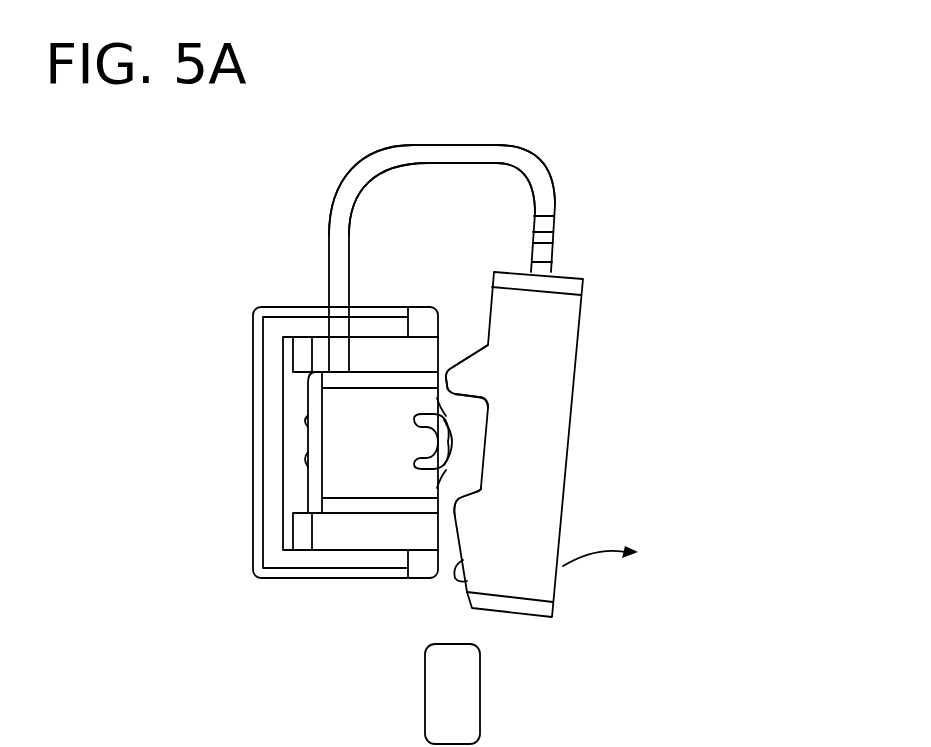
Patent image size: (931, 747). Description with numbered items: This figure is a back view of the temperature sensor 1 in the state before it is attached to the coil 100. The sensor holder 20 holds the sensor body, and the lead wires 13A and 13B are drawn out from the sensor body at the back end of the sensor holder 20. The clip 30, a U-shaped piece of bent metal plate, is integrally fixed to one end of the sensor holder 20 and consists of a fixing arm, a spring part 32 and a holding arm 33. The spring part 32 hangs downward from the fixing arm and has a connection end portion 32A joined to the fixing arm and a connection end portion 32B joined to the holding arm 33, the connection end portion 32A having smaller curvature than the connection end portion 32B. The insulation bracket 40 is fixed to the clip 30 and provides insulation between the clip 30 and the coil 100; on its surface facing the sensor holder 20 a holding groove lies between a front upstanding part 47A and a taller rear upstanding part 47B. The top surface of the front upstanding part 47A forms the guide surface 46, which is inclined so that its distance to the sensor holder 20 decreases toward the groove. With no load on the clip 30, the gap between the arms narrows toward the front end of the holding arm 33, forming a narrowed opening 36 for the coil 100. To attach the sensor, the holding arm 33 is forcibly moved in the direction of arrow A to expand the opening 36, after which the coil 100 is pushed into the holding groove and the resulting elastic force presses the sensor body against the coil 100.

The temperature sensor 1 is at (300, 258).
The sensor holder 20 is at (283, 397).
The lead wire 13A is at (304, 424).
The lead wire 13B is at (304, 462).
The clip 30 is at (457, 145).
The spring part 32 is at (500, 148).
The connection end portion 32A is at (382, 158).
The connection end portion 32B is at (545, 168).
The holding arm 33 is at (552, 253).
The opening 36 is at (445, 538).
The insulation bracket 40 is at (567, 475).
The guide surface 46 is at (470, 582).
The front upstanding part 47A is at (443, 500).
The rear upstanding part 47B is at (443, 358).
The coil 100 is at (481, 697).
The arrow A is at (595, 567).